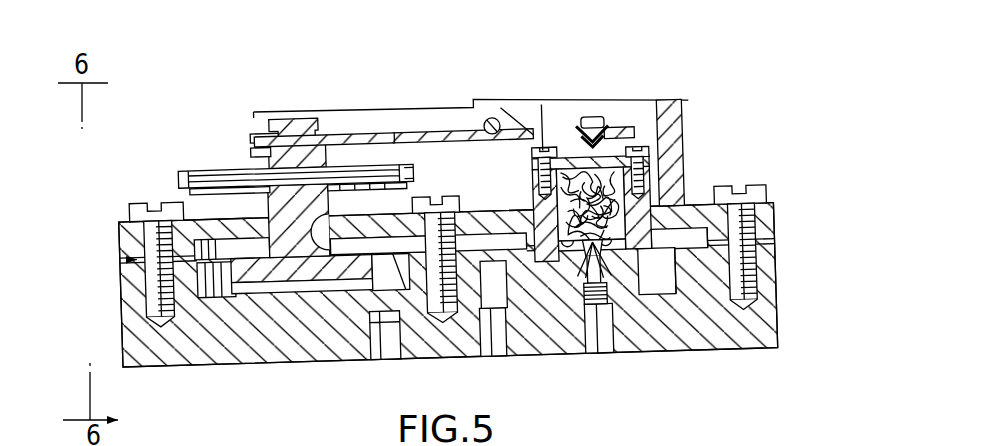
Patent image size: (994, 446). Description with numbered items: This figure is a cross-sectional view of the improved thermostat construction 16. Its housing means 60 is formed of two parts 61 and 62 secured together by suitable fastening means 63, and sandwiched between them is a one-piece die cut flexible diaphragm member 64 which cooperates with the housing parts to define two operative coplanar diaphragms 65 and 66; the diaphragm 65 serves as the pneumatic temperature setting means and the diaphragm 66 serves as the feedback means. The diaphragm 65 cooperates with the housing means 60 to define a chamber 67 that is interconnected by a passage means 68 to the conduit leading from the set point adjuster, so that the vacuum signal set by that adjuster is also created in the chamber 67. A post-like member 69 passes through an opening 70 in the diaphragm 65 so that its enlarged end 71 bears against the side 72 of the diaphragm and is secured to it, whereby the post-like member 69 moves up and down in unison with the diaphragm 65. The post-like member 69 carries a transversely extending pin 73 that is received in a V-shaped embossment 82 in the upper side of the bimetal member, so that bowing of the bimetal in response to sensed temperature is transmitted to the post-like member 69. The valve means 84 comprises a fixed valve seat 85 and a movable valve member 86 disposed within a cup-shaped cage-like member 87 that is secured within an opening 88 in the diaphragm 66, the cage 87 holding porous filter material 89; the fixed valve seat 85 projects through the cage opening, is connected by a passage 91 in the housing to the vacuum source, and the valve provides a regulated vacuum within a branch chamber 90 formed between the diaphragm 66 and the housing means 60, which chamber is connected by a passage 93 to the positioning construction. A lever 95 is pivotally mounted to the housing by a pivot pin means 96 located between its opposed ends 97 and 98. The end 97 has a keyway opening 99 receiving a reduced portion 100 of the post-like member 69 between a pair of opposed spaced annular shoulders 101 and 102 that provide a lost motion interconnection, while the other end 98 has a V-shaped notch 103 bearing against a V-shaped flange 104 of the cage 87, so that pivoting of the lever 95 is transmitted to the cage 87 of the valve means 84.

The thermostat construction 16 is at (805, 120).
The housing means 60 is at (779, 337).
The housing part 61 is at (783, 299).
The housing part 62 is at (780, 242).
The fastening means 63 is at (773, 209).
The flexible diaphragm member 64 is at (136, 262).
The diaphragm 65 is at (213, 276).
The diaphragm 66 is at (703, 265).
The chamber 67 is at (282, 292).
The passage means 68 is at (373, 350).
The post-like member 69 is at (275, 207).
The opening 70 is at (333, 220).
The enlarged end 71 is at (350, 286).
The side 72 is at (411, 348).
The pin 73 is at (206, 171).
The V-shaped embossment 82 is at (192, 200).
The valve means 84 is at (667, 228).
The fixed valve seat 85 is at (553, 293).
The movable valve member 86 is at (584, 251).
The cup-shaped cage-like member 87 is at (660, 206).
The opening 88 is at (640, 268).
The porous filter material 89 is at (653, 176).
The branch chamber 90 is at (680, 288).
The passage 91 is at (608, 357).
The passage 93 is at (504, 351).
The lever 95 is at (445, 146).
The pivot pin means 96 is at (504, 128).
The end 97 is at (277, 141).
The end 98 is at (638, 132).
The keyway opening 99 is at (356, 119).
The reduced portion 100 is at (355, 147).
The annular shoulder 101 is at (279, 159).
The annular shoulder 102 is at (280, 137).
The V-shaped notch 103 is at (582, 141).
The V-shaped flange 104 is at (598, 129).